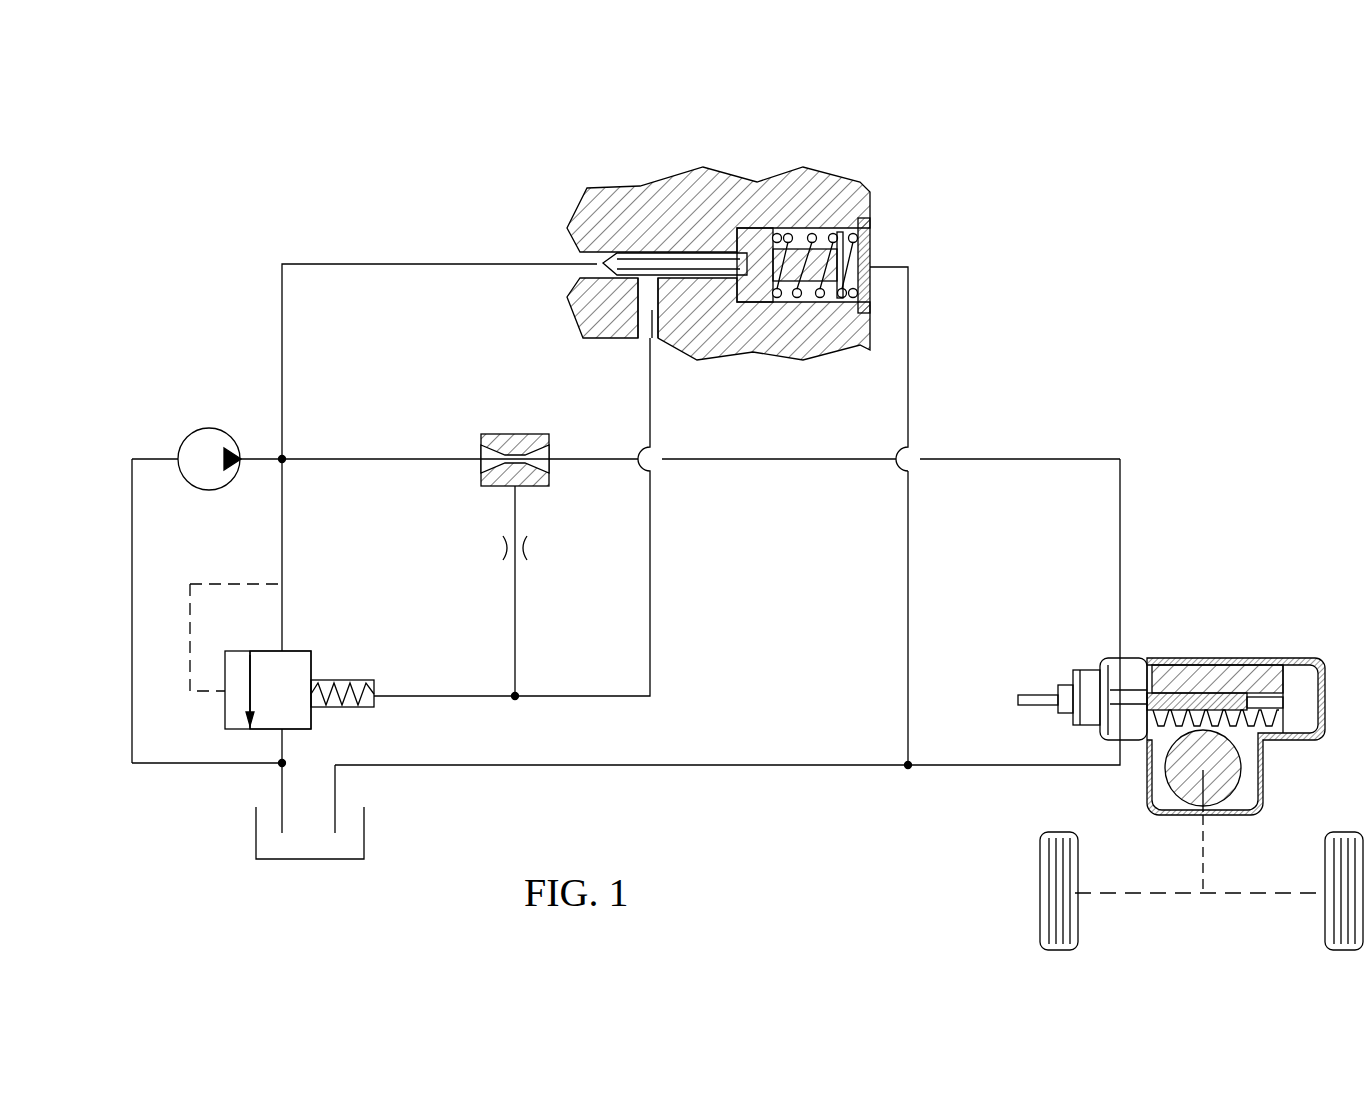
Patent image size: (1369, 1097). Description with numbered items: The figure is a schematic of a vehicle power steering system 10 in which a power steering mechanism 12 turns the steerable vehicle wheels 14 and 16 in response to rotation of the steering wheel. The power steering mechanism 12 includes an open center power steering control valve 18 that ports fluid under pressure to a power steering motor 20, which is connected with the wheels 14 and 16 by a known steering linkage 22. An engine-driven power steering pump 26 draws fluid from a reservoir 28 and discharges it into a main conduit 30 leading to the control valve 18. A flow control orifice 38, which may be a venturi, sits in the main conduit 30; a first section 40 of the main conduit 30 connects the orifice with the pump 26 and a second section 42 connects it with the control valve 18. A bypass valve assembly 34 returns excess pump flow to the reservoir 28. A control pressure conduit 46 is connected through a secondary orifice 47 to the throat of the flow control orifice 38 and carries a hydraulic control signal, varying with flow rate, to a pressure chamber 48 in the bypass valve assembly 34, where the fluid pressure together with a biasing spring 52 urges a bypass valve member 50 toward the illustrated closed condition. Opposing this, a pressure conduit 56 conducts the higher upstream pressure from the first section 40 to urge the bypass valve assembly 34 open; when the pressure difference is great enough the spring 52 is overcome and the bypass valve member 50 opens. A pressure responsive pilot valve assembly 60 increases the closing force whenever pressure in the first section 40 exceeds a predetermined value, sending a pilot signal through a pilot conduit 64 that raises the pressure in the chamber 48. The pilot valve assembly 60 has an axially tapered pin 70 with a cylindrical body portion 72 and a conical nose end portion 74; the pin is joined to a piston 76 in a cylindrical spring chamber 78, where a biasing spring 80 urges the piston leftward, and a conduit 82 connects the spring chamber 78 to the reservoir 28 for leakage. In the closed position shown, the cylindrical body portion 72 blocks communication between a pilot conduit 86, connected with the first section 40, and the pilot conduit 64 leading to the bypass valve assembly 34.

The vehicle power steering system 10 is at (229, 316).
The power steering mechanism 12 is at (1260, 638).
The steerable vehicle wheel 14 is at (1058, 915).
The steerable vehicle wheel 16 is at (1340, 918).
The open center power steering control valve 18 is at (1125, 695).
The power steering motor 20 is at (1320, 692).
The steering linkage 22 is at (1205, 853).
The power steering pump 26 is at (189, 418).
The reservoir 28 is at (255, 853).
The main conduit 30 is at (777, 452).
The bypass valve assembly 34 is at (243, 666).
The flow control orifice 38 is at (516, 434).
The first section of the main conduit 40 is at (256, 456).
The second section of the main conduit 42 is at (848, 462).
The control pressure conduit 46 is at (517, 618).
The secondary orifice 47 is at (503, 548).
The pressure chamber 48 is at (345, 712).
The bypass valve member 50 is at (290, 672).
The biasing spring 52 is at (360, 688).
The pressure conduit 56 is at (185, 641).
The pressure responsive pilot valve assembly 60 is at (572, 195).
The pilot conduit 64 is at (652, 570).
The axially tapered pin 70 is at (667, 245).
The cylindrical body portion 72 is at (698, 276).
The conical nose end portion 74 is at (566, 302).
The piston 76 is at (768, 303).
The cylindrical spring chamber 78 is at (830, 303).
The biasing spring 80 is at (868, 230).
The conduit 82 is at (908, 346).
The pilot conduit 86 is at (370, 264).